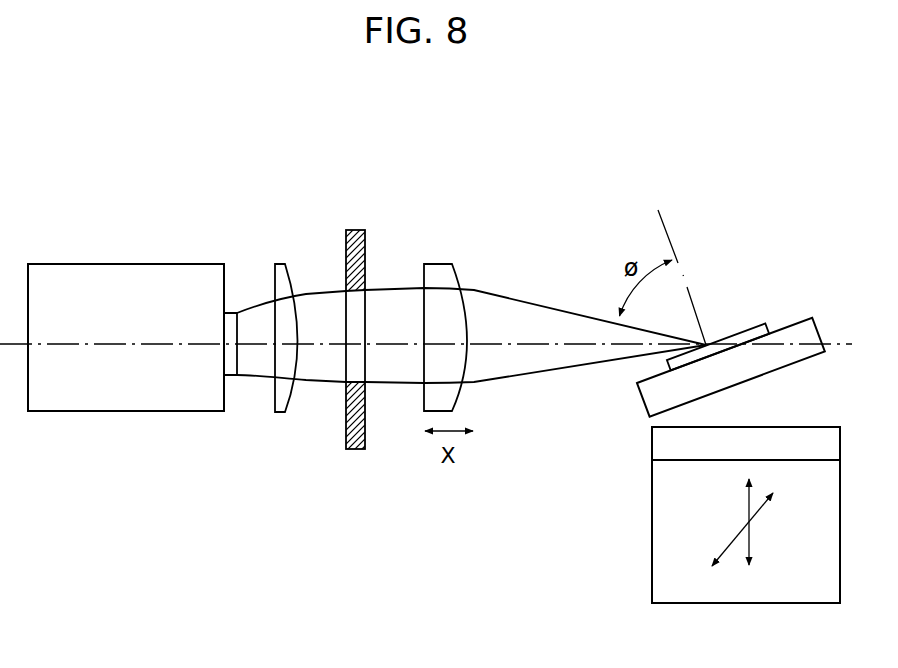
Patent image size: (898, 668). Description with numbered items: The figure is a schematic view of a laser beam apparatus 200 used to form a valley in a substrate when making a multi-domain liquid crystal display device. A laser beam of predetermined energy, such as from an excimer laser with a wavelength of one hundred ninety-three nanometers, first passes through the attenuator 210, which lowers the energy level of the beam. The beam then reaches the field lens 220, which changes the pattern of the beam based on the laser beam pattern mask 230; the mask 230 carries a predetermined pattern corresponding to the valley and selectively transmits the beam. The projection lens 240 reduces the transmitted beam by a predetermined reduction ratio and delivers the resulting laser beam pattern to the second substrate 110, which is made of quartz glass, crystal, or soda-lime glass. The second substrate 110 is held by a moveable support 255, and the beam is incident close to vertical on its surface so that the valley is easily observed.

The optical measuring system 200 is at (520, 523).
The attenuator 210 is at (131, 411).
The field lens 220 is at (281, 412).
The laser beam pattern mask 230 is at (355, 449).
The projection lens 240 is at (437, 264).
The second substrate 110 is at (757, 327).
The moveable support 255 is at (787, 357).